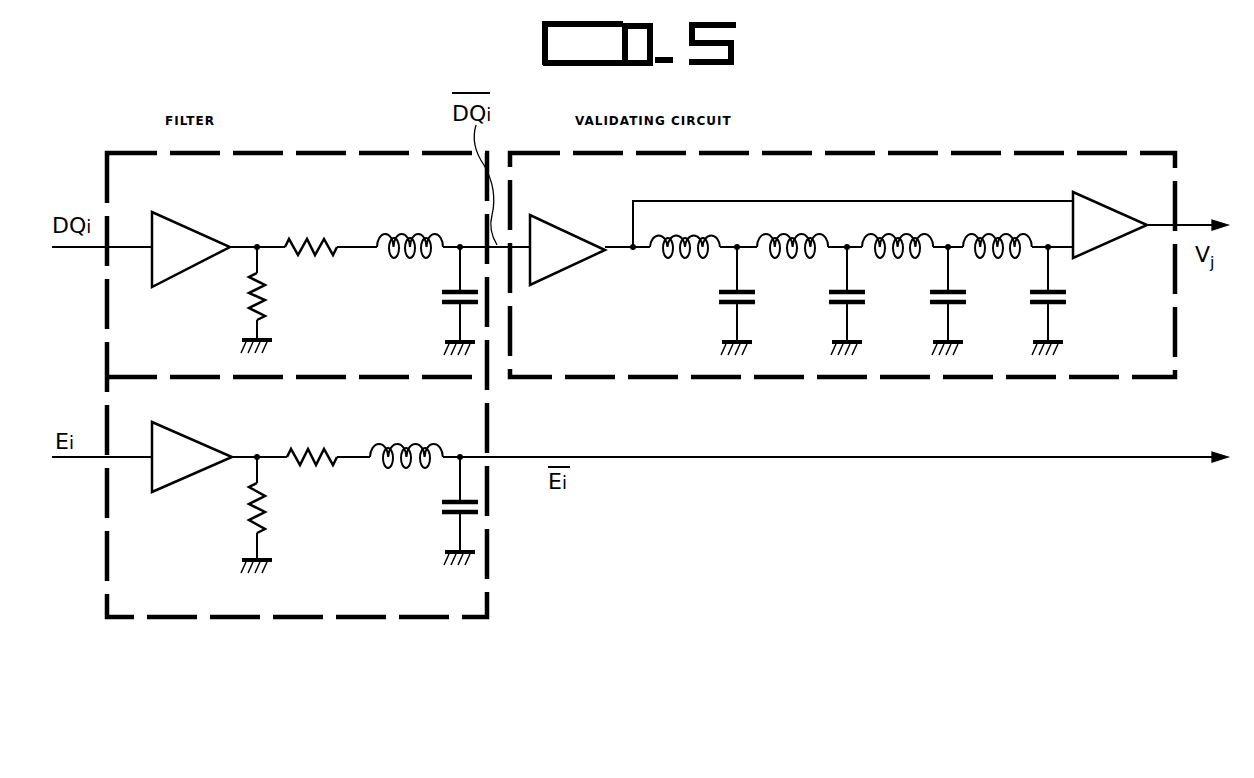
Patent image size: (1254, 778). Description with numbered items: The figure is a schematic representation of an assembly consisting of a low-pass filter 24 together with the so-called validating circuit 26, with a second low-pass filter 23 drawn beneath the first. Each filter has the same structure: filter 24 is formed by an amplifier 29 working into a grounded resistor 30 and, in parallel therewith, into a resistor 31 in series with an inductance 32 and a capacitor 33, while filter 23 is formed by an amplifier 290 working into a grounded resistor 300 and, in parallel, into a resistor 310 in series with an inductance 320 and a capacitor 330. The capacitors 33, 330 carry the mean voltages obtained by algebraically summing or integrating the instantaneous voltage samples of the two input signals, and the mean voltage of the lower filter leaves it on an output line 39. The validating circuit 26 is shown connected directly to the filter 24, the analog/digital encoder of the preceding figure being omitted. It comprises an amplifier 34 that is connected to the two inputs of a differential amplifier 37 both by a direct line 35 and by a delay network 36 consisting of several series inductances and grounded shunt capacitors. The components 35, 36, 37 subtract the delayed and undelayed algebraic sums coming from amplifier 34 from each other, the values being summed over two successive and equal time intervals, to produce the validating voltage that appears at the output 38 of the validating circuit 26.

The low-pass filter 23 is at (200, 618).
The low-pass filter 24 is at (156, 153).
The validating circuit 26 is at (558, 153).
The amplifier 29 is at (188, 224).
The grounded resistor 30 is at (247, 304).
The resistor 31 is at (308, 236).
The inductance 32 is at (404, 231).
The capacitor 33 is at (450, 292).
The amplifier 34 is at (567, 222).
The direct line 35 is at (853, 200).
The delay network 36 is at (700, 258).
The differential amplifier 37 is at (1103, 200).
The output 38 is at (1183, 223).
The output line Ei-bar 39 is at (928, 458).
The amplifier 290 is at (198, 434).
The grounded resistor 300 is at (241, 520).
The resistor 310 is at (317, 444).
The inductance 320 is at (418, 438).
The capacitor 330 is at (448, 504).